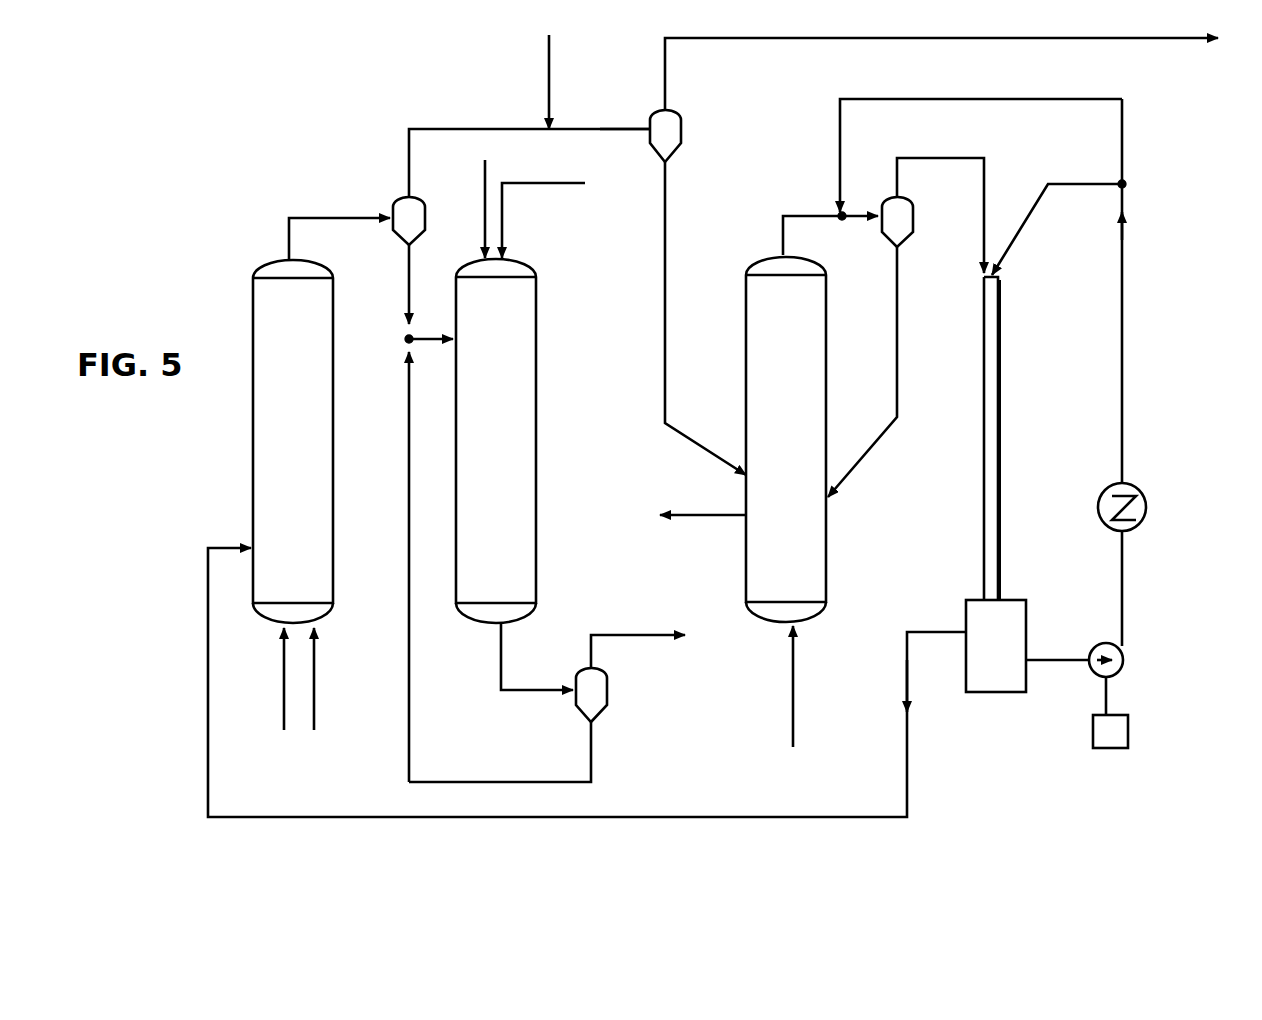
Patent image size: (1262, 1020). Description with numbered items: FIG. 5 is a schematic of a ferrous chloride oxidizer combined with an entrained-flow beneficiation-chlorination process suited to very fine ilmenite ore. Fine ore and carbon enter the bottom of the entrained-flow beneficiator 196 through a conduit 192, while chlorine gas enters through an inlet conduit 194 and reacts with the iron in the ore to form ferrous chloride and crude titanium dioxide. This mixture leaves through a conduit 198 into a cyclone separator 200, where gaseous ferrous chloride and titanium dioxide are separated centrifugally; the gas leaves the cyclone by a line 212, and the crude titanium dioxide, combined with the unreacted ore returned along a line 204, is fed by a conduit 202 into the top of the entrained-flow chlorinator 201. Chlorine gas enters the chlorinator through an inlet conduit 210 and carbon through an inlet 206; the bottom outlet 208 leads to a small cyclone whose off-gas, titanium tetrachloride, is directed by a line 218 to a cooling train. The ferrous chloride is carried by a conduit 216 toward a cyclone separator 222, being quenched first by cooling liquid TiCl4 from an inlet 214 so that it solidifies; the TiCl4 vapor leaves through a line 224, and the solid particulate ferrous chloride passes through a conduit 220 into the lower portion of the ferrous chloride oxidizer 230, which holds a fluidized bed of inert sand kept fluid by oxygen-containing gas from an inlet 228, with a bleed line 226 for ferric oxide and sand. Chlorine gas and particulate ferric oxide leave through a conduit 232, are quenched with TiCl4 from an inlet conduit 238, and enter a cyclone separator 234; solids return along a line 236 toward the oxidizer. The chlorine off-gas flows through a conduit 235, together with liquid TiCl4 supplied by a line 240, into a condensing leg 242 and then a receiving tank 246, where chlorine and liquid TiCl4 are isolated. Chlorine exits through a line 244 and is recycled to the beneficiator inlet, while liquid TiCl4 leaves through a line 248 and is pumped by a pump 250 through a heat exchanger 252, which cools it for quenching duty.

The conduit 192 is at (314, 732).
The inlet conduit 194 is at (284, 712).
The entrained-flow beneficiator 196 is at (256, 318).
The conduit 198 is at (289, 234).
The cyclone separator 200 is at (406, 208).
The entrained-flow chlorinator 201 is at (530, 316).
The conduit 202 is at (409, 272).
The unreacted ore recycle line 204 is at (417, 684).
The inlet 206 is at (484, 176).
The chlorinator outlet line 208 is at (501, 652).
The inlet conduit 210 is at (585, 183).
The cyclone gas outlet line 212 is at (409, 150).
The inlet 214 is at (549, 64).
The conduit 216 is at (622, 128).
The TiCl4 line to cooling train 218 is at (640, 636).
The conduit 220 is at (665, 270).
The cyclone separator 222 is at (678, 125).
The TiCl4 vapor line to condensation 224 is at (770, 40).
The bleed line for Fe2O3 and sand 226 is at (716, 517).
The inlet 228 is at (794, 684).
The ferrous chloride oxidizer 230 is at (820, 301).
The conduit 232 is at (783, 232).
The cyclone separator 234 is at (908, 214).
The conduit 235 is at (942, 158).
The cyclone solids return line 236 is at (898, 311).
The inlet conduit 238 is at (1070, 99).
The line 240 is at (1020, 232).
The condensing leg 242 is at (999, 414).
The line 244 is at (880, 818).
The receiving tank 246 is at (1018, 607).
The line 248 is at (1062, 661).
The pump 250 is at (1123, 606).
The heat exchanger 252 is at (1147, 499).